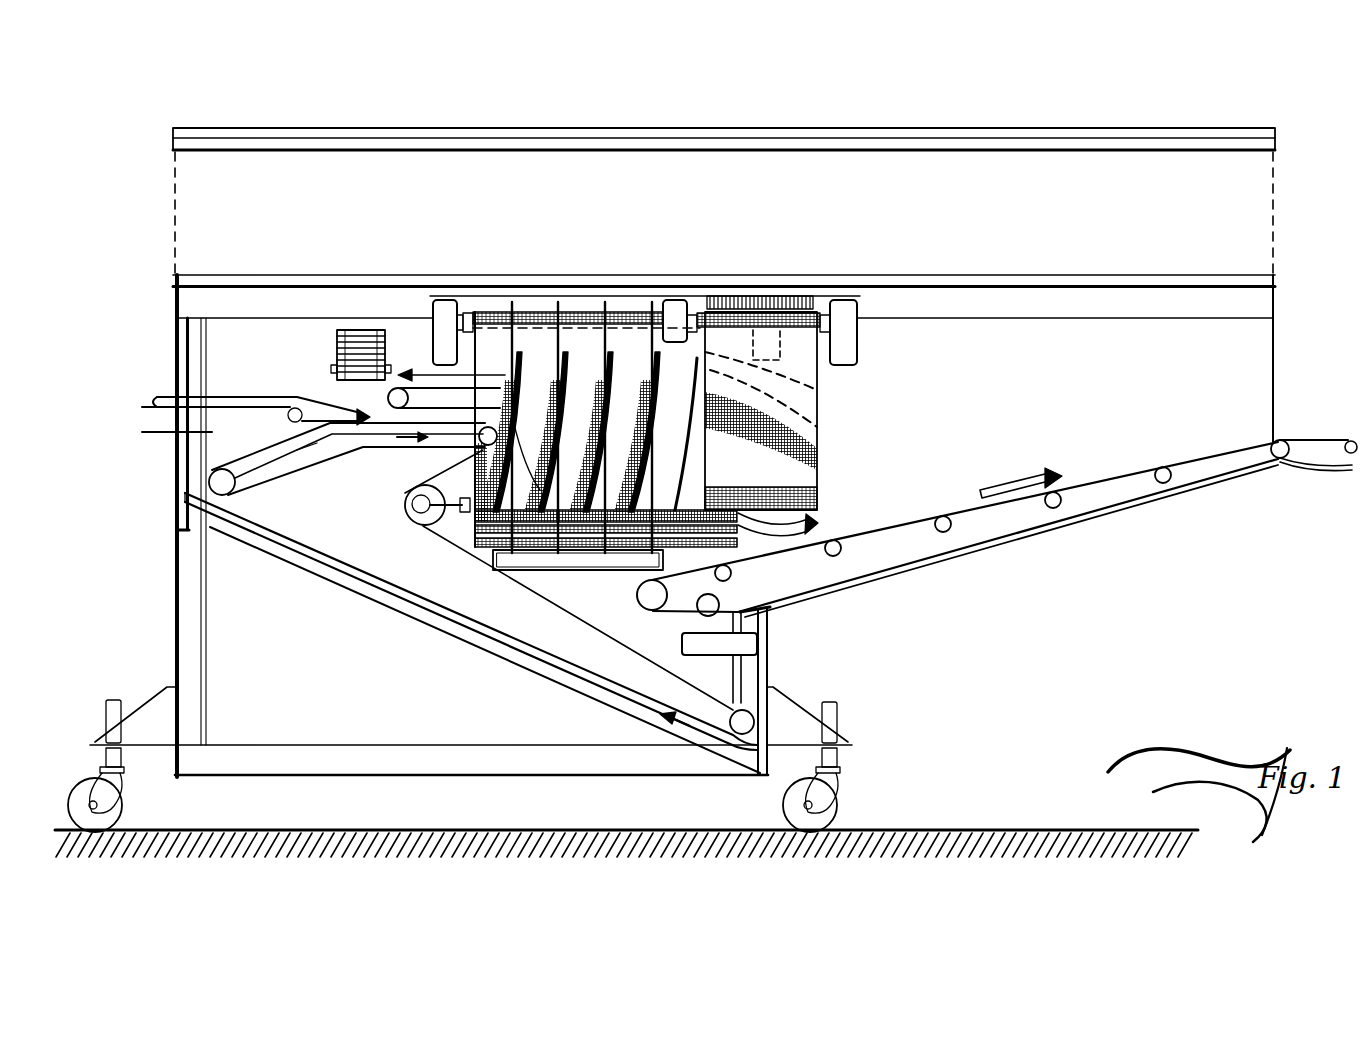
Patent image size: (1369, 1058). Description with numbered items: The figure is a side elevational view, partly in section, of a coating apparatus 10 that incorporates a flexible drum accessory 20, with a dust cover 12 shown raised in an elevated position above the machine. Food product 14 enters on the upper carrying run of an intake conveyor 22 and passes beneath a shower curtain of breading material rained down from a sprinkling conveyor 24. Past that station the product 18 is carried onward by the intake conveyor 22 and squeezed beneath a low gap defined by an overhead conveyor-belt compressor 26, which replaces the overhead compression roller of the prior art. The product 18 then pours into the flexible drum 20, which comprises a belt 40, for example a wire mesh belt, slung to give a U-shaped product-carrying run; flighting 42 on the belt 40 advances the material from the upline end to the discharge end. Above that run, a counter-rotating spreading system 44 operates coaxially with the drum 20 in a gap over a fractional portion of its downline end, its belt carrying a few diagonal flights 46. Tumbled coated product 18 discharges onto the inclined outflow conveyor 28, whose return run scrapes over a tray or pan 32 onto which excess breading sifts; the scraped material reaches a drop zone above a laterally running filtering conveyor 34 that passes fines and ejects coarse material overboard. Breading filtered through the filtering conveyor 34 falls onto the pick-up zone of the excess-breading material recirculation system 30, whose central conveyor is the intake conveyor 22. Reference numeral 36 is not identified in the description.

The coating apparatus 10 is at (262, 82).
The dust cover 12 is at (545, 127).
The food product 14 is at (270, 390).
The product 18 is at (1033, 465).
The flexible drum accessory 20 is at (632, 303).
The intake conveyor 22 is at (277, 443).
The sprinkling conveyor 24 is at (335, 345).
The overhead conveyor-belt compressor 26 is at (390, 396).
The outflow conveyor 28 is at (1200, 455).
The excess-breading material recirculation system 30 is at (430, 628).
The tray or pan 32 is at (1062, 530).
The filtering conveyor 34 is at (765, 645).
The return belt 36 is at (368, 560).
The belt 40 is at (537, 312).
The flighting 42 is at (591, 385).
The counter-rotating spreading system 44 is at (820, 460).
The diagonal flights 46 is at (817, 385).